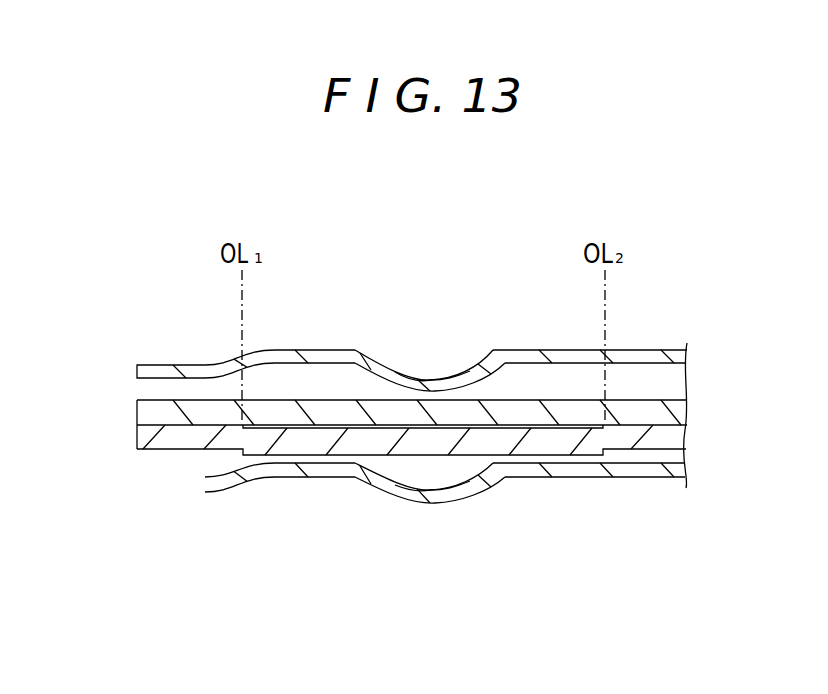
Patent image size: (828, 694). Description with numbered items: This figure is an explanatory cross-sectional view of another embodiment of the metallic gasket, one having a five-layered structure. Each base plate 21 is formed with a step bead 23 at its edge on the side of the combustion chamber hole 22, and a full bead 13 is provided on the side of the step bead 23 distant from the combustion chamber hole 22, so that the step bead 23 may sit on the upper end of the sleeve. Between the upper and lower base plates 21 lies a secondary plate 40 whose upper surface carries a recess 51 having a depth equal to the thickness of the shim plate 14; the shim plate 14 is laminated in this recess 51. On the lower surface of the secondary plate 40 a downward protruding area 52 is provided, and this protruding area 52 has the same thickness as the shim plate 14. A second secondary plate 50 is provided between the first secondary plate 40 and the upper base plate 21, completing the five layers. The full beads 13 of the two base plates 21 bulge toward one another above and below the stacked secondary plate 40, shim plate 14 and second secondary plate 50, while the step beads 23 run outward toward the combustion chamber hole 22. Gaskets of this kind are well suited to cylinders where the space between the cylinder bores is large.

The full bead 13 is at (403, 374).
The shim plate 14 is at (452, 400).
The base plate 21 is at (546, 350).
The combustion chamber hole 22 is at (136, 372).
The step bead 23 is at (224, 358).
The secondary plate 40 is at (375, 452).
The second secondary plate 50 is at (634, 420).
The recess 51 is at (340, 350).
The protruding area 52 is at (466, 472).